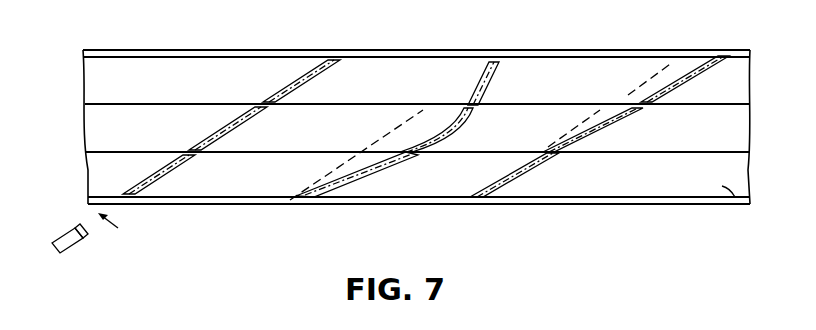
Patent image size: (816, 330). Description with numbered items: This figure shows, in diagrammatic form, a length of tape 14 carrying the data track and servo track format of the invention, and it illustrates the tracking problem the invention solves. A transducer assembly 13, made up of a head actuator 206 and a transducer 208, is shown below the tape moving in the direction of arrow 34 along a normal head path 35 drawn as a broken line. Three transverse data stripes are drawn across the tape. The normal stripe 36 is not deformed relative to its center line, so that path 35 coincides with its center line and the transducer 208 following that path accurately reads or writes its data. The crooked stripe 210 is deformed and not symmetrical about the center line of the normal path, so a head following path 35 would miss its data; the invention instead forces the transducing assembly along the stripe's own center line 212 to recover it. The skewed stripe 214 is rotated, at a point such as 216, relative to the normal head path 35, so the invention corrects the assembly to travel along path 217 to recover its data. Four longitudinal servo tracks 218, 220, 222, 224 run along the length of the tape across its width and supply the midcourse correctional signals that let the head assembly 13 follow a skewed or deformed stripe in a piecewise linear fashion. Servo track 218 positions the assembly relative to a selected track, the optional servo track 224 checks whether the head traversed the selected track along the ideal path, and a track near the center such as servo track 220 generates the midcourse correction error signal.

The transducer assembly 13 is at (70, 247).
The tape 14 is at (80, 151).
The arrow 34 is at (116, 228).
The normal head path 35 is at (670, 60).
The normal stripe 36 is at (297, 77).
The head actuator 206 is at (62, 254).
The transducer 208 is at (83, 239).
The crooked stripe 210 is at (441, 95).
The center line of crooked stripe 212 is at (394, 130).
The skewed stripe 214 is at (588, 126).
The point of rotation 216 is at (494, 181).
The corrected head path 217 is at (618, 93).
The longitudinal servo track 218 is at (101, 197).
The longitudinal servo track 220 is at (95, 152).
The longitudinal servo track 222 is at (89, 108).
The longitudinal servo track 224 is at (88, 57).